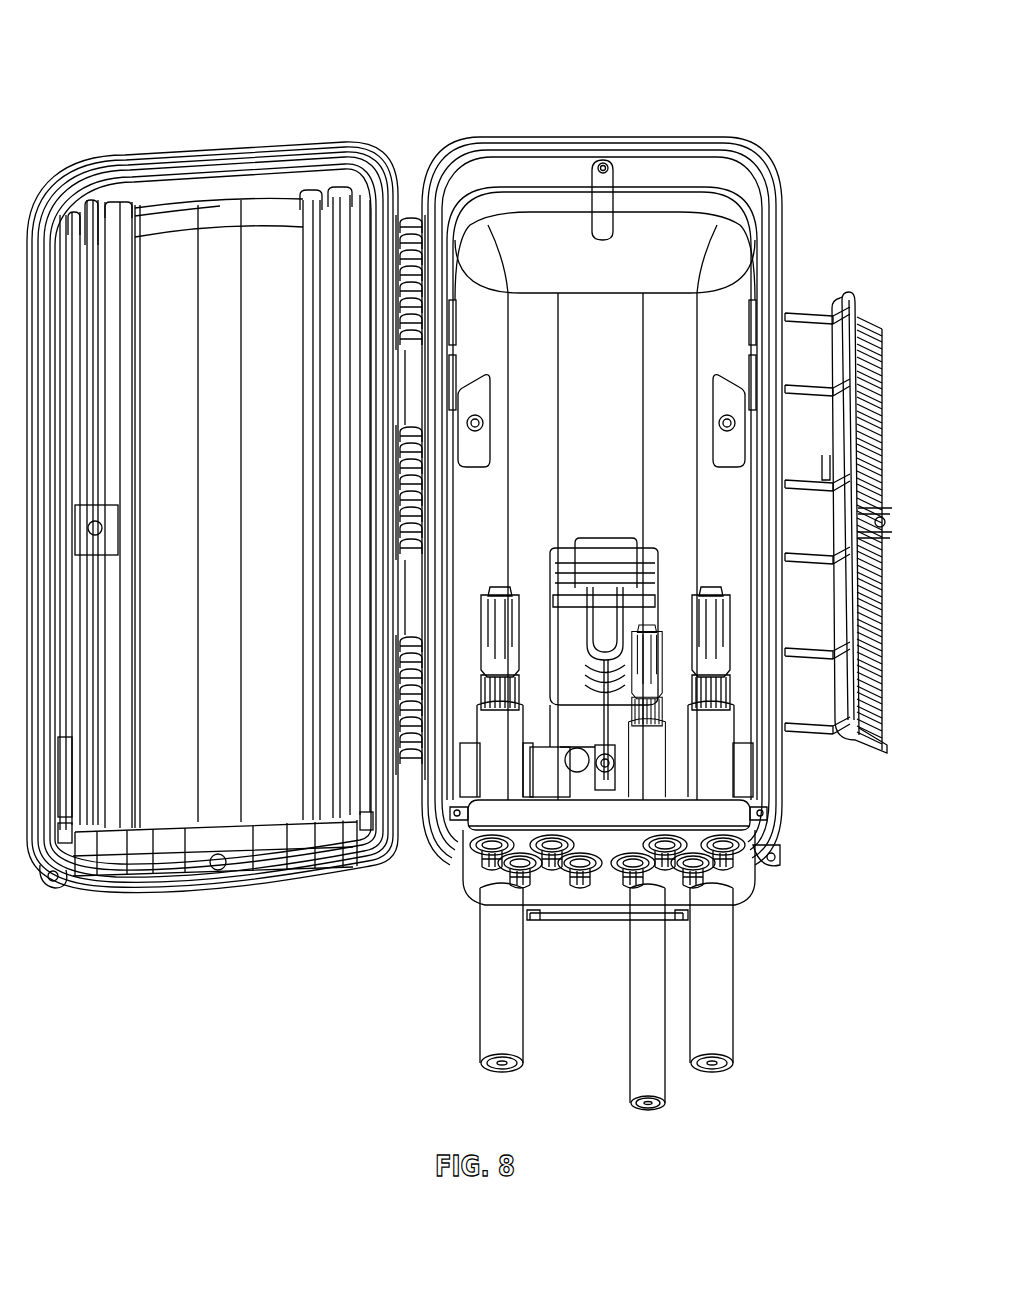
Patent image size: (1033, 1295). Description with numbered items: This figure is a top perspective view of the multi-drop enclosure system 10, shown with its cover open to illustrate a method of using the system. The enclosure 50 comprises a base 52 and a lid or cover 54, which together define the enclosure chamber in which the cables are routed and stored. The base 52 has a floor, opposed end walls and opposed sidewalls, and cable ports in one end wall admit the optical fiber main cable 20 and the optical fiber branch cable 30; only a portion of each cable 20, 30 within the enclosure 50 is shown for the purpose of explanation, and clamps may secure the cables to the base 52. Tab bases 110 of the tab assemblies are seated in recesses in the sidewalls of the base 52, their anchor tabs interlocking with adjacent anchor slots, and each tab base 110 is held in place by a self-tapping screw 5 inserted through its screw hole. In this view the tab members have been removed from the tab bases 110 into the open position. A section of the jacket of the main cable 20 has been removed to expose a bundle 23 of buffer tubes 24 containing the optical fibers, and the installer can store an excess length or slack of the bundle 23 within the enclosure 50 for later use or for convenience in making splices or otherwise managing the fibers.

The multi-drop enclosure system 10 is at (125, 52).
The enclosure 50 is at (176, 915).
The lid or cover 54 is at (235, 150).
The base 52 is at (547, 143).
The tab base 110 is at (478, 373).
The self-tapping screw 5 is at (480, 418).
The bundle 23 is at (430, 775).
The buffer tubes 24 is at (468, 688).
The optical fiber main cable 20 is at (492, 983).
The optical fiber branch cable 30 is at (640, 995).